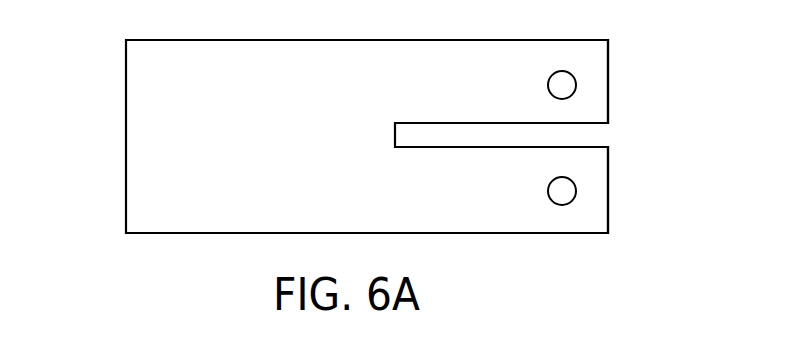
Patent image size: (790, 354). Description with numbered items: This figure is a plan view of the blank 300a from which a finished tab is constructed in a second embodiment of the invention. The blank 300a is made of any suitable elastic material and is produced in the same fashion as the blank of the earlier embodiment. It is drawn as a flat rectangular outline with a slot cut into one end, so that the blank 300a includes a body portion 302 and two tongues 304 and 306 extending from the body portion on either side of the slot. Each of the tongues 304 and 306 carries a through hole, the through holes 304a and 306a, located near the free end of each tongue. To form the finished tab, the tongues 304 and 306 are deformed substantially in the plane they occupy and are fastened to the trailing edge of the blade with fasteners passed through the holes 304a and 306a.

The body portion 302 is at (137, 140).
The blank 300a is at (301, 52).
The tongue 304 is at (476, 52).
The through hole 304a is at (564, 83).
The tongue 306 is at (444, 212).
The through hole 306a is at (564, 190).